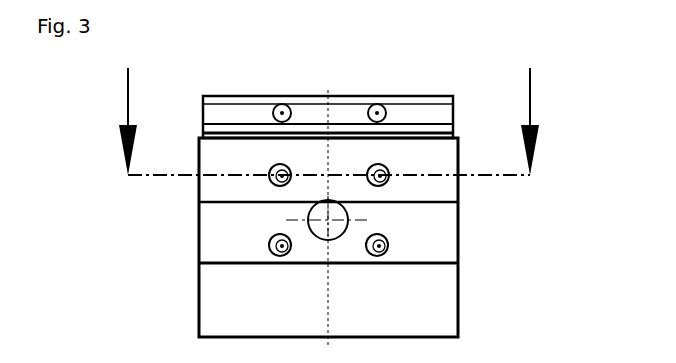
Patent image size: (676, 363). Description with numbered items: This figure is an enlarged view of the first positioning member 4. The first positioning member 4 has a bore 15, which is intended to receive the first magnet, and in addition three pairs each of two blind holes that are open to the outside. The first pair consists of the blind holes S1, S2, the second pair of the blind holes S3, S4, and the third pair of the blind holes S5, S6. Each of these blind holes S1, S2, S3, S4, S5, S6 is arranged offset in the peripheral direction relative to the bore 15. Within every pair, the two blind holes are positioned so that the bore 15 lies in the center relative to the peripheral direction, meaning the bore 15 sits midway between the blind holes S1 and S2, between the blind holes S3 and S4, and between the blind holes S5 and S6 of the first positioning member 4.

The first positioning member 4 is at (428, 299).
The bore 15 is at (339, 216).
The blind hole S1 is at (272, 113).
The blind hole S2 is at (386, 113).
The blind hole S3 is at (270, 177).
The blind hole S4 is at (388, 178).
The blind hole S5 is at (270, 245).
The blind hole S6 is at (389, 246).